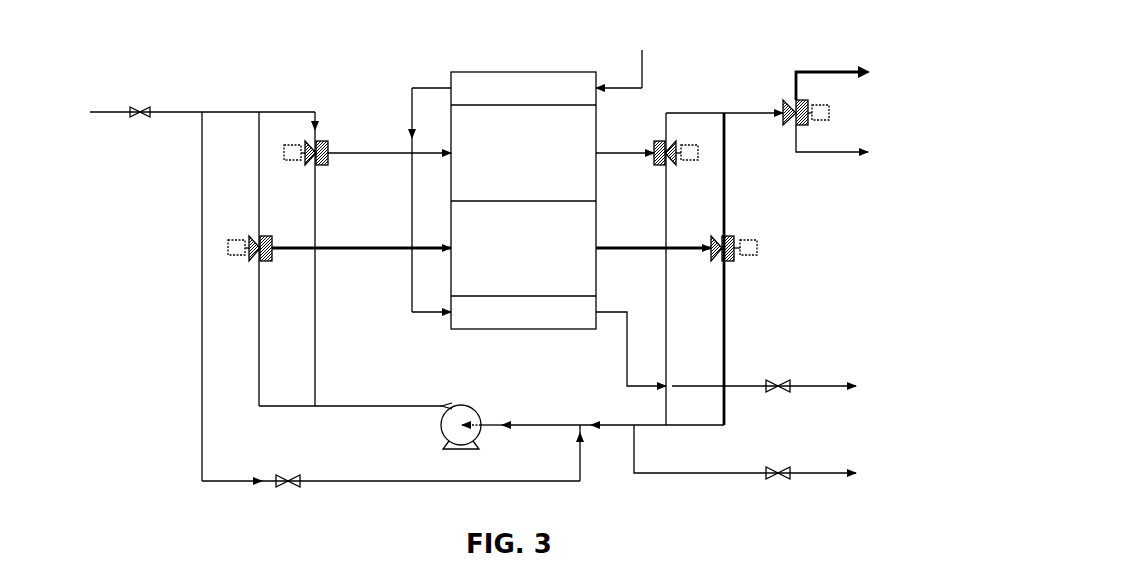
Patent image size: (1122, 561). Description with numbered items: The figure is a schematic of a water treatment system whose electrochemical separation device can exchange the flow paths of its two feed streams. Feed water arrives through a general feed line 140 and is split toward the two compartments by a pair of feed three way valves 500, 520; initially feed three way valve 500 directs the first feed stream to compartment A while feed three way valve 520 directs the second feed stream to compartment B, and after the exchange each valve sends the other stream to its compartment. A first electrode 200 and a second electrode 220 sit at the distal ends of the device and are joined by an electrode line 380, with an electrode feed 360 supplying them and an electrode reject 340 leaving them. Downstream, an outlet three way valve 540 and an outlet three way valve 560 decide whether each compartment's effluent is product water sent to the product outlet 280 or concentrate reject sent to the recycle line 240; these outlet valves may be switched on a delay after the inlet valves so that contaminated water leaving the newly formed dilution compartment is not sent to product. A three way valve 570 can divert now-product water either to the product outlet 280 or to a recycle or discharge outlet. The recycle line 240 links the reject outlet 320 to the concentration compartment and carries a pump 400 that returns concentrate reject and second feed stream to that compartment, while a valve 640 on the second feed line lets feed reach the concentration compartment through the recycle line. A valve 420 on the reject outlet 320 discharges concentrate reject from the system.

The general feed line 140 is at (179, 292).
The first electrode 200 is at (518, 70).
The second electrode 220 is at (534, 331).
The recycle line 240 is at (735, 342).
The product outlet 280 is at (860, 143).
The reject outlet 320 is at (773, 457).
The electrode reject 340 is at (754, 357).
The electrode feed 360 is at (623, 56).
The electrode line 380 is at (432, 87).
The pump 400 is at (455, 405).
The valve 420 is at (778, 478).
The feed three way valve 500 is at (305, 160).
The feed three way valve 520 is at (253, 258).
The outlet three way valve 540 is at (676, 163).
The outlet three way valve 560 is at (734, 262).
The three way valve 570 is at (783, 103).
The valve 640 is at (287, 483).